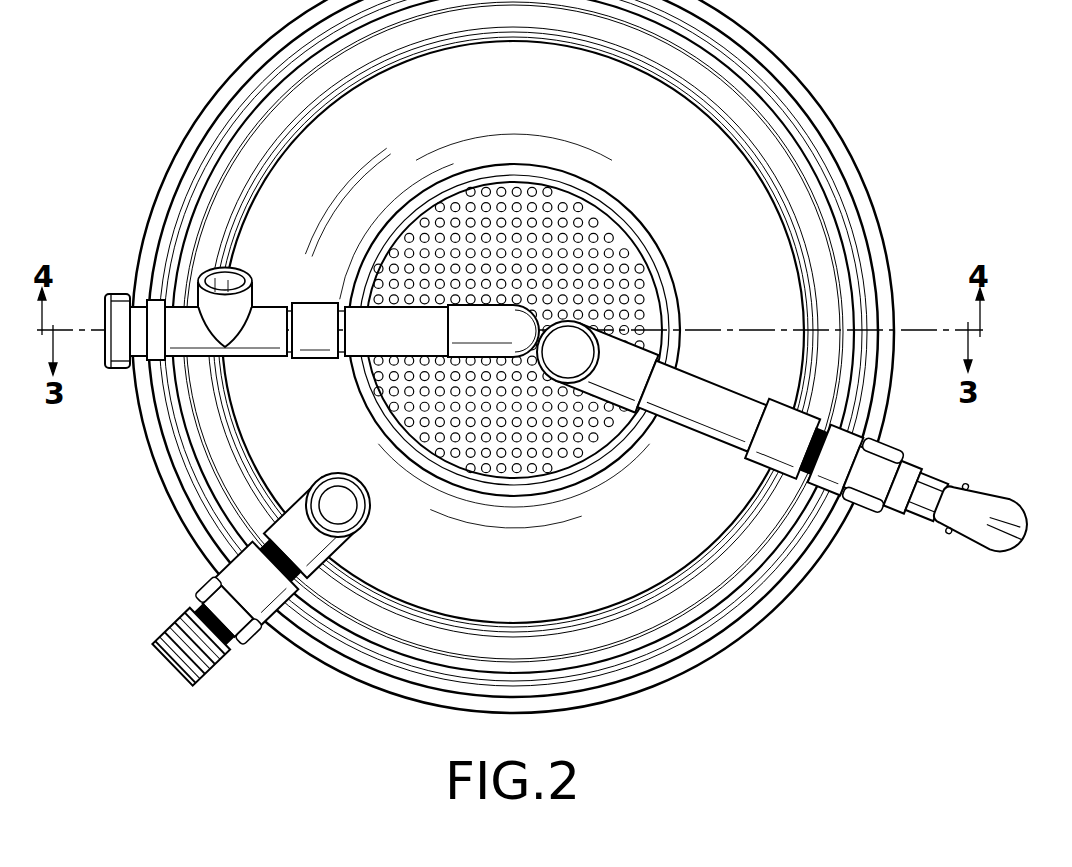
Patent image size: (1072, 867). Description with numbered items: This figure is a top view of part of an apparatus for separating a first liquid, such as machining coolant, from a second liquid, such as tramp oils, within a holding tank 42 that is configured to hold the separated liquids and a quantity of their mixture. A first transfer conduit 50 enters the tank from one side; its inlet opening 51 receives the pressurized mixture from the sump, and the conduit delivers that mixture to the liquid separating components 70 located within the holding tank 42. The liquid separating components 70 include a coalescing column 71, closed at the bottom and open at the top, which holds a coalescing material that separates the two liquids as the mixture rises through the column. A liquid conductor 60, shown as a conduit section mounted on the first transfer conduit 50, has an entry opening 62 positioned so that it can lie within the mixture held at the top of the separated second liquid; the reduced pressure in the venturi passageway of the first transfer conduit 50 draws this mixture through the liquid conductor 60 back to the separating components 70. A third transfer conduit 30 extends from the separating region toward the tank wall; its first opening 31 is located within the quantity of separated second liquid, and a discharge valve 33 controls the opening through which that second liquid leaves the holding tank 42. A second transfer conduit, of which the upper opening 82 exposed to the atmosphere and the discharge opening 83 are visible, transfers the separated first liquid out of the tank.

The third transfer conduit 30 is at (742, 384).
The first opening 31 is at (569, 372).
The discharge valve 33 is at (989, 491).
The holding tank 42 is at (804, 78).
The first transfer conduit 50 is at (264, 368).
The inlet opening 51 is at (108, 312).
The liquid conductor 60 is at (253, 290).
The entry opening 62 is at (226, 272).
The liquid separating components 70 is at (601, 232).
The coalescing column 71 is at (571, 170).
The upper opening 82 is at (348, 508).
The discharge opening 83 is at (172, 663).